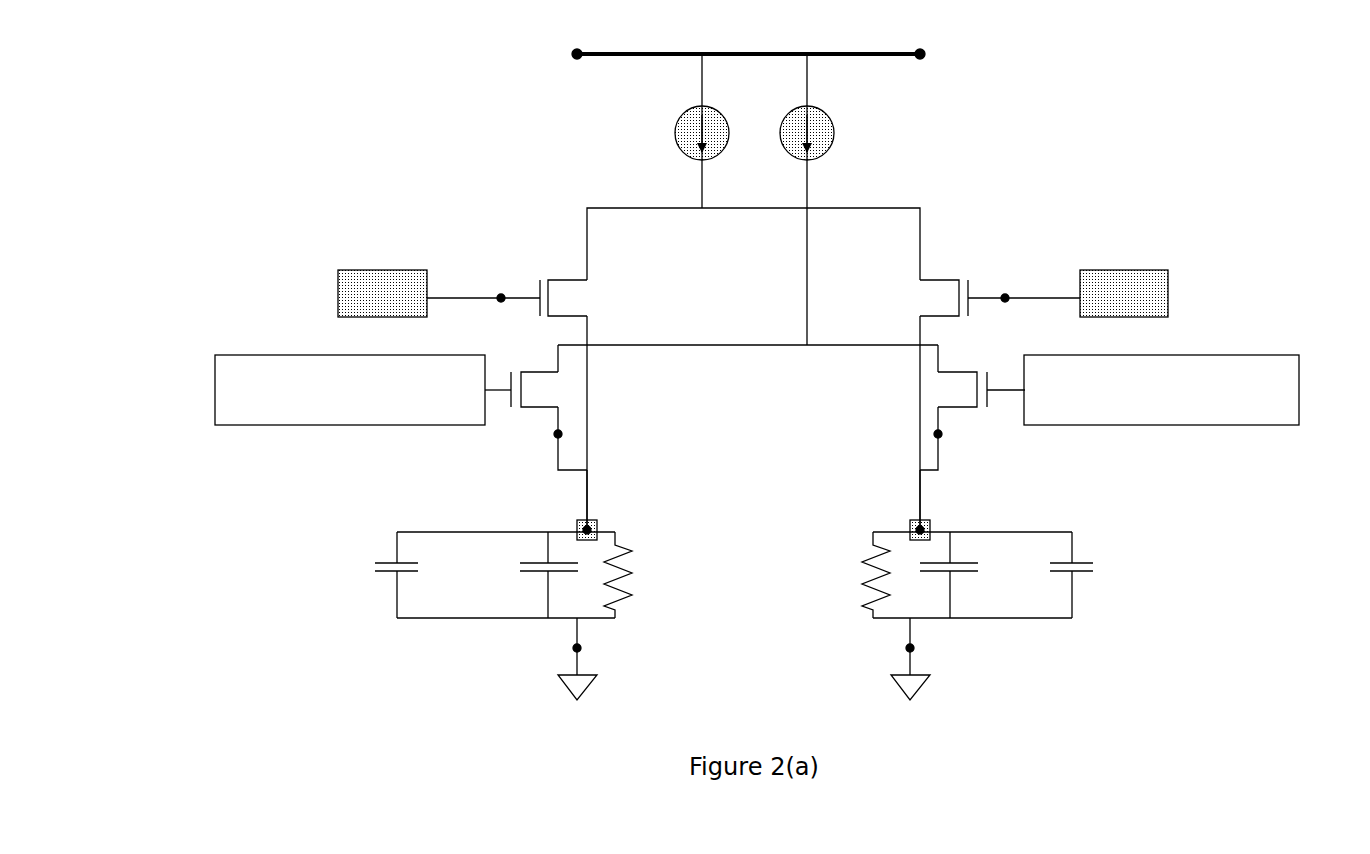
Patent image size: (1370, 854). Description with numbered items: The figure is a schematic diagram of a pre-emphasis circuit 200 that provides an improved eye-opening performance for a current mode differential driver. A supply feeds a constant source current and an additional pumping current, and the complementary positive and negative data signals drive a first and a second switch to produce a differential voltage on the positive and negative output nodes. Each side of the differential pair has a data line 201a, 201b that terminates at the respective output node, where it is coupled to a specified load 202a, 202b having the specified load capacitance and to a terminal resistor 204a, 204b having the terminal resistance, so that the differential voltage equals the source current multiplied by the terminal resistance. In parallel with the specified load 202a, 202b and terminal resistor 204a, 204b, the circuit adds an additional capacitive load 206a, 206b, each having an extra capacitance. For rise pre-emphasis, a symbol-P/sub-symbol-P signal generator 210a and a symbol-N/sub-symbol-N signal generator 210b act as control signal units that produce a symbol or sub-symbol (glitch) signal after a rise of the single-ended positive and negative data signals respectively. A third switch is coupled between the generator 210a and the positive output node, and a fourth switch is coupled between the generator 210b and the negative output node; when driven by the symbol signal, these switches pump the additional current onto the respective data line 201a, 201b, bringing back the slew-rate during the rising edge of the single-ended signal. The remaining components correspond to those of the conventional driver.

The pre-emphasis circuit 200 is at (352, 166).
The data line 201a is at (593, 424).
The data line 201b is at (915, 424).
The specified load 202a is at (543, 578).
The specified load 202b is at (955, 578).
The terminal resistor 204a is at (645, 597).
The terminal resistor 204b is at (852, 597).
The additional capacitive load 206a is at (388, 580).
The additional capacitive load 206b is at (1077, 578).
The symbol-P/sub-symbol-P signal generator 210a is at (283, 427).
The symbol-N/sub-symbol-N signal generator 210b is at (1232, 427).